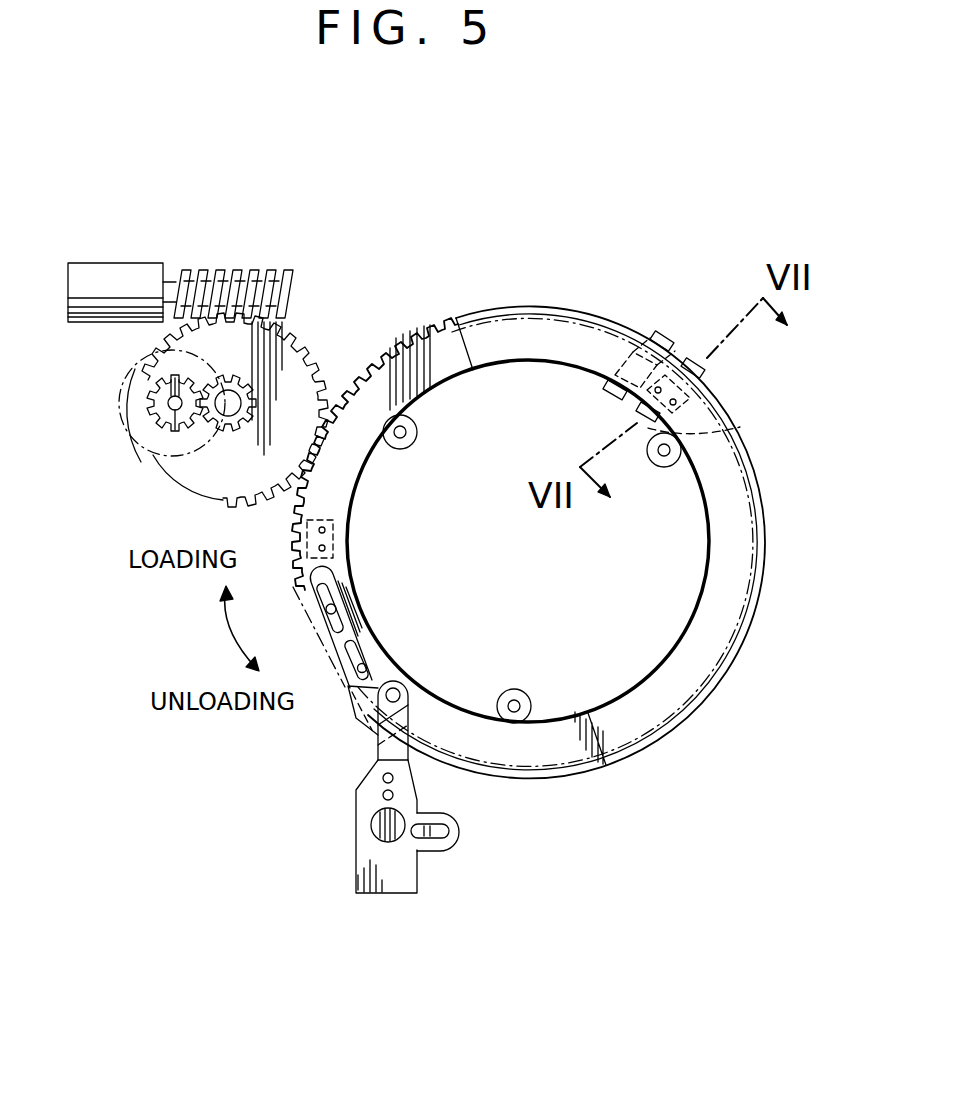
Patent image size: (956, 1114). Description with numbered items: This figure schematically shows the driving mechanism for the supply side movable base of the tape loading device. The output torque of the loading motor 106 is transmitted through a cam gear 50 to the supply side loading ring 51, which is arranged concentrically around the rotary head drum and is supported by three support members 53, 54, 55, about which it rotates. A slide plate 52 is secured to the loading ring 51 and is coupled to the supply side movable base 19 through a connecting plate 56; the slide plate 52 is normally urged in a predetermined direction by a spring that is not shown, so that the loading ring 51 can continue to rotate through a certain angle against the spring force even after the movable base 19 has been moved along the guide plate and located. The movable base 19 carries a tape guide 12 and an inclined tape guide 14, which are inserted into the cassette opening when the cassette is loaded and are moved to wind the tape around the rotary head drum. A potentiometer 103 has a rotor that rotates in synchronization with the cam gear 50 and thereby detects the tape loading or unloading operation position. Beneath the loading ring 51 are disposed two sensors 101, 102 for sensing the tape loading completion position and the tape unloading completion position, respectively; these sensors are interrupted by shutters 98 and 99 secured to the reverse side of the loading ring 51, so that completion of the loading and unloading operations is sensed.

The tape guide 12 is at (373, 823).
The inclined tape guide 14 is at (445, 828).
The supply side movable base 19 is at (390, 885).
The cam gear 50 is at (298, 362).
The supply side loading ring 51 is at (517, 330).
The slide plate 52 is at (348, 628).
The support member 53 is at (418, 433).
The support member 54 is at (665, 468).
The support member 55 is at (513, 689).
The connecting plate 56 is at (385, 745).
The shutter 98 is at (338, 549).
The shutter 99 is at (738, 426).
The sensor 101 is at (655, 338).
The sensor 102 is at (700, 372).
The potentiometer 103 is at (150, 410).
The loading motor 106 is at (122, 280).